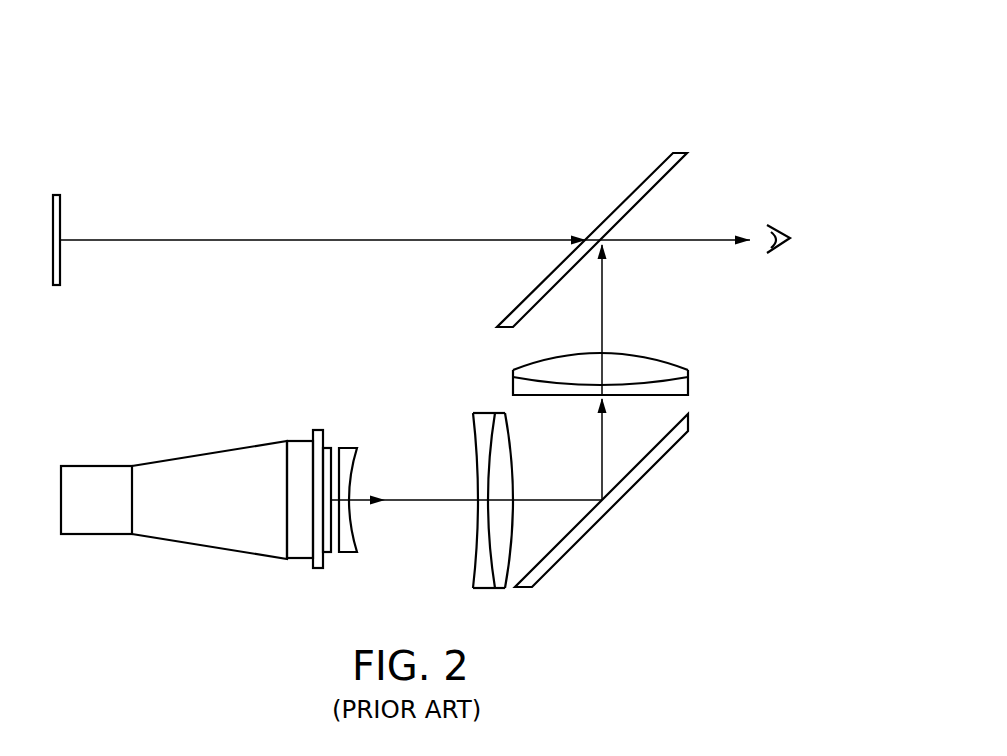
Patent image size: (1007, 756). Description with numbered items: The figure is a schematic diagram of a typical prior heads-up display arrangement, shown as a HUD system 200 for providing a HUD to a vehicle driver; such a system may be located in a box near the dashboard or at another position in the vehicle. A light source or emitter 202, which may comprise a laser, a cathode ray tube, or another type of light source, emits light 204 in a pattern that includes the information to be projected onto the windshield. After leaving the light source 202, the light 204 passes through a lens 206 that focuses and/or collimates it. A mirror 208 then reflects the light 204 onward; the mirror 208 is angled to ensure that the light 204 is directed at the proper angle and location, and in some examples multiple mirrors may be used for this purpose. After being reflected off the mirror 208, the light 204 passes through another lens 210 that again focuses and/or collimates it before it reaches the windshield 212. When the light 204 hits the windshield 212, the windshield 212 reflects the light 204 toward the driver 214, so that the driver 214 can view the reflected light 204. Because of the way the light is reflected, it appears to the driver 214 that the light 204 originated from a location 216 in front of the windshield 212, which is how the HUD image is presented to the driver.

The HUD system 200 is at (157, 56).
The light source 202 is at (210, 548).
The light 204 is at (432, 502).
The lens 206 is at (473, 434).
The mirror 208 is at (608, 512).
The another lens 210 is at (690, 382).
The windshield 212 is at (628, 196).
The driver 214 is at (802, 186).
The location 216 is at (53, 267).